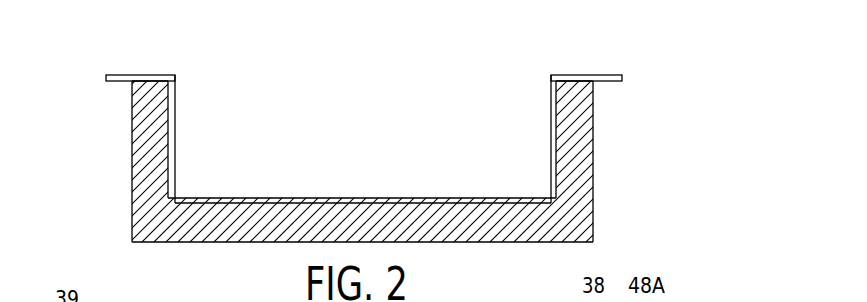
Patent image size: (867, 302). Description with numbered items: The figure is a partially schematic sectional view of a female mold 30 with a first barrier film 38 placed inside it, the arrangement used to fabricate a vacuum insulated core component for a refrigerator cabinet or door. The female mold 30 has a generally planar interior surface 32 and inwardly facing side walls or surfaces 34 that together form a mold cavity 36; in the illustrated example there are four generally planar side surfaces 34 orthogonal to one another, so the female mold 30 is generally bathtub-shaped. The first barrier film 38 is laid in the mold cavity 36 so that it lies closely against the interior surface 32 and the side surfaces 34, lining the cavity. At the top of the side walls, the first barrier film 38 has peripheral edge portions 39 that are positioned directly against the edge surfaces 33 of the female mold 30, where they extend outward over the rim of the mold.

The female mold 30 is at (597, 152).
The interior surface 32 is at (355, 198).
The edge surfaces 33 is at (157, 78).
The side surfaces 34 is at (176, 124).
The mold cavity 36 is at (355, 119).
The first barrier film 38 is at (279, 197).
The peripheral edge portions 39 is at (117, 76).